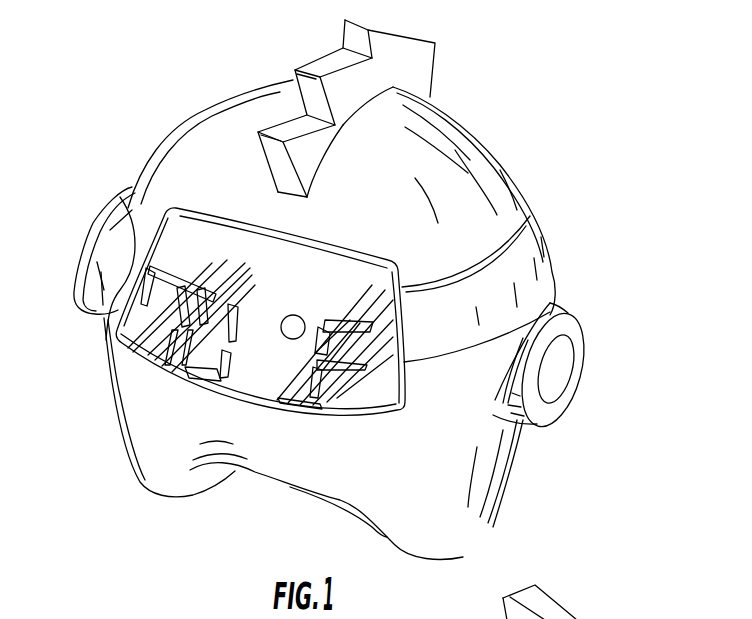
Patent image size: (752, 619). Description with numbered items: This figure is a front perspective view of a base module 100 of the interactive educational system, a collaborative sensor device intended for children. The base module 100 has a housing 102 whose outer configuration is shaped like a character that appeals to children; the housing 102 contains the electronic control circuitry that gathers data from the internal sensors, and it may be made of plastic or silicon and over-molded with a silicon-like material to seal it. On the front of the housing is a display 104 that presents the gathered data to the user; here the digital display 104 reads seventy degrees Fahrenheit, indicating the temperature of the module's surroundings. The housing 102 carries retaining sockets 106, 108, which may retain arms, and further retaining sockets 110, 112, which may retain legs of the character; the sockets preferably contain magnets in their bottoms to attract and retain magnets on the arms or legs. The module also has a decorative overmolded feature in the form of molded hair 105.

The base module 100 is at (359, 298).
The housing 102 is at (223, 107).
The display 104 is at (137, 320).
The molded hair 105 is at (320, 56).
The retaining socket 106 is at (92, 222).
The retaining socket 108 is at (560, 366).
The retaining socket 110 is at (192, 497).
The retaining socket 112 is at (463, 557).